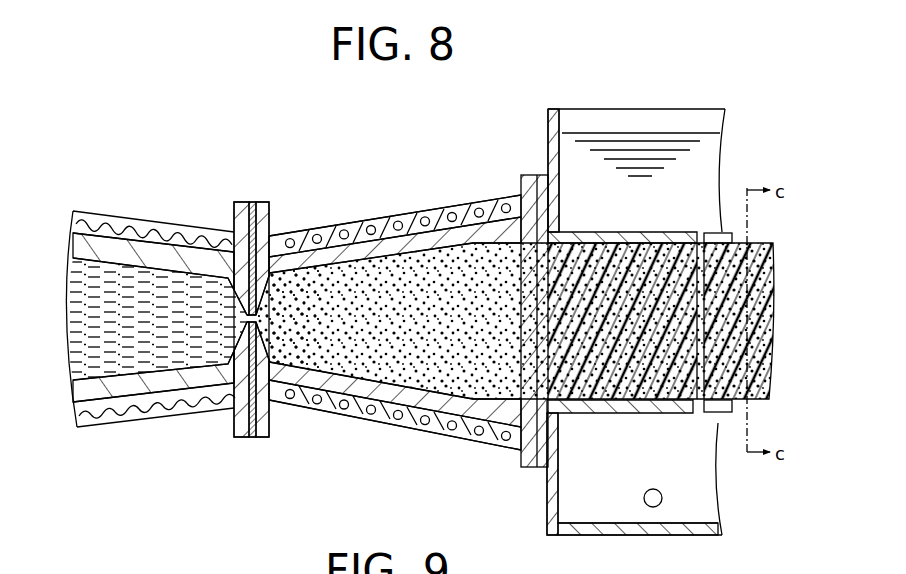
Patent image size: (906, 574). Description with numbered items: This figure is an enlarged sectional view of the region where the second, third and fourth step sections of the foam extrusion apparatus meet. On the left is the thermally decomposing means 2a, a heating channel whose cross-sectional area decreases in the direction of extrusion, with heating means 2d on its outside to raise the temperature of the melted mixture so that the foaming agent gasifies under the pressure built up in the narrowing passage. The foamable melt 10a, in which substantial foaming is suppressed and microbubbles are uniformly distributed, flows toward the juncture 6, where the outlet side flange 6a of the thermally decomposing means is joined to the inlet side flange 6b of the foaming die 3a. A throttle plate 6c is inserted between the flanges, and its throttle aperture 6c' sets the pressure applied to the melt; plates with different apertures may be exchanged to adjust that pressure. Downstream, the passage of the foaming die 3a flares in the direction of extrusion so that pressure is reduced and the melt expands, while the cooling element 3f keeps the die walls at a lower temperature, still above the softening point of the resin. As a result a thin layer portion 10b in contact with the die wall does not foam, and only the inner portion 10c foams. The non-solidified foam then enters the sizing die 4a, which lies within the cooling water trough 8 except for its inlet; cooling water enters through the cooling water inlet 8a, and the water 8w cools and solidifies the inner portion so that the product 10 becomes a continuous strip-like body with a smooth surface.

The thermally decomposing means 2a is at (85, 240).
The heating means 2d is at (132, 225).
The juncture 6 is at (245, 197).
The outlet side flange 6a is at (240, 230).
The inlet side flange 6b is at (267, 222).
The throttle plate 6c is at (265, 297).
The throttle aperture 6c' is at (313, 249).
The foaming die 3a is at (468, 235).
The cooling element 3f is at (405, 218).
The sizing die 4a is at (672, 237).
The cooling water trough 8 is at (592, 534).
The cooling water inlet 8a is at (653, 507).
The water 8w is at (638, 133).
The product 10 is at (762, 320).
The foamable melt 10a is at (103, 340).
The thin layer portion 10b is at (313, 360).
The inner portion 10c is at (357, 327).